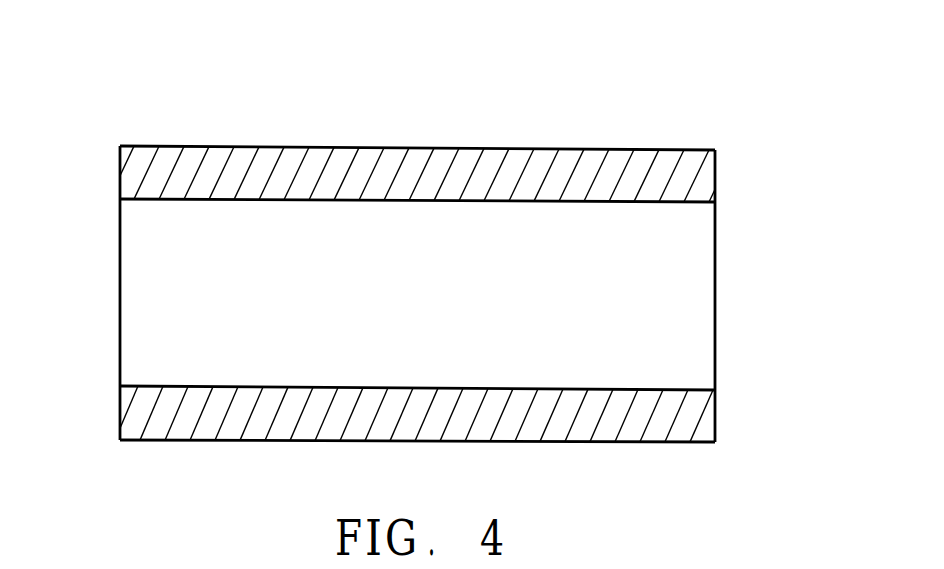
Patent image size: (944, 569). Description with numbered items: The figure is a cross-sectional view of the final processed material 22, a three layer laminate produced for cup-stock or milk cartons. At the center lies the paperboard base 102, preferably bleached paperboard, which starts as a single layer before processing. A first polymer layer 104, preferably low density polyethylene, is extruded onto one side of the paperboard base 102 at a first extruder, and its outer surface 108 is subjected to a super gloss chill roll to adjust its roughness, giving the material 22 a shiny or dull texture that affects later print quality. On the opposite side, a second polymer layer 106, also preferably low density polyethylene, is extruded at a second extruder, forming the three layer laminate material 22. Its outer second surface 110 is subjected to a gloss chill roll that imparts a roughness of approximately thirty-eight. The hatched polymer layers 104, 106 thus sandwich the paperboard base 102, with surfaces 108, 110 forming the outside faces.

The material 22 is at (102, 117).
The paperboard base 102 is at (120, 293).
The polymer layer 104 is at (715, 178).
The second polymer layer 106 is at (715, 433).
The surface 108 is at (423, 148).
The second surface 110 is at (427, 442).